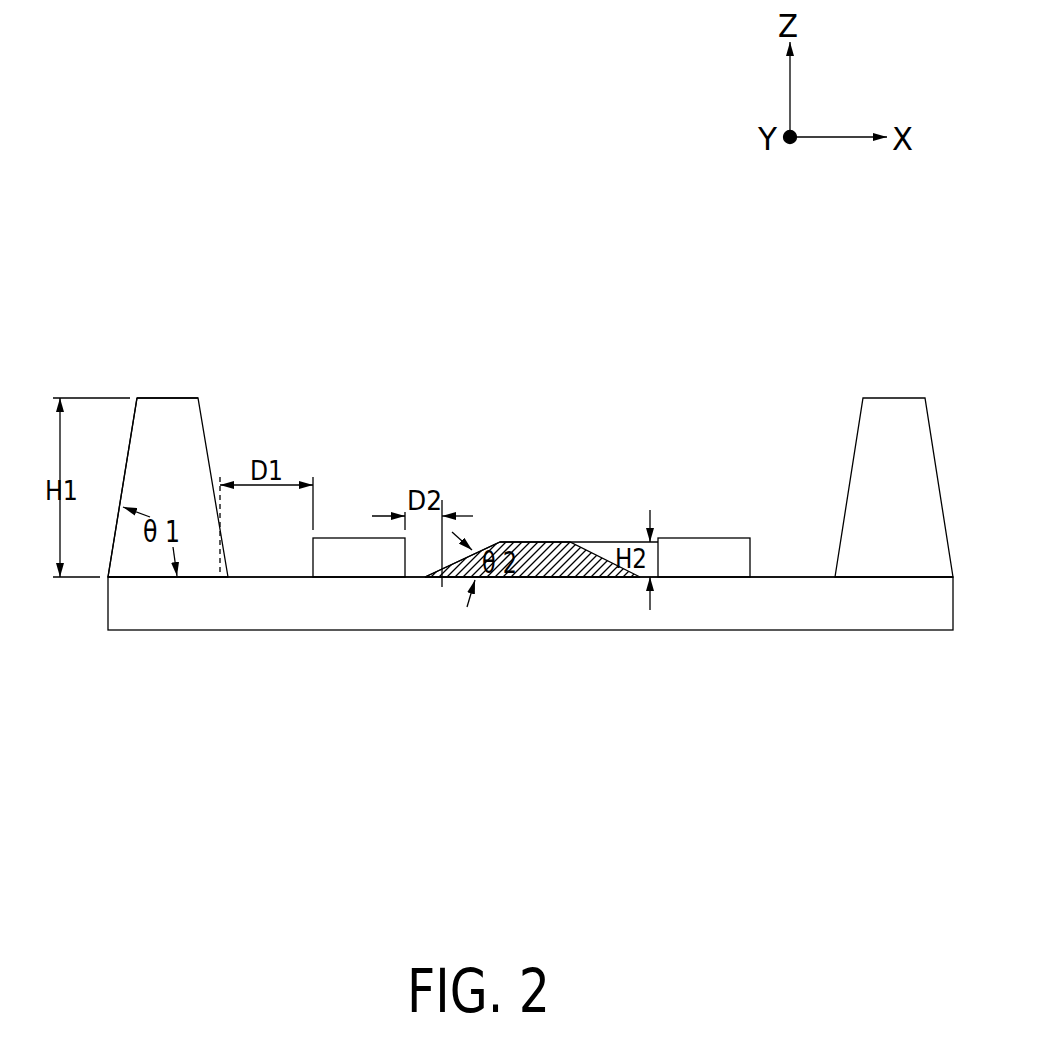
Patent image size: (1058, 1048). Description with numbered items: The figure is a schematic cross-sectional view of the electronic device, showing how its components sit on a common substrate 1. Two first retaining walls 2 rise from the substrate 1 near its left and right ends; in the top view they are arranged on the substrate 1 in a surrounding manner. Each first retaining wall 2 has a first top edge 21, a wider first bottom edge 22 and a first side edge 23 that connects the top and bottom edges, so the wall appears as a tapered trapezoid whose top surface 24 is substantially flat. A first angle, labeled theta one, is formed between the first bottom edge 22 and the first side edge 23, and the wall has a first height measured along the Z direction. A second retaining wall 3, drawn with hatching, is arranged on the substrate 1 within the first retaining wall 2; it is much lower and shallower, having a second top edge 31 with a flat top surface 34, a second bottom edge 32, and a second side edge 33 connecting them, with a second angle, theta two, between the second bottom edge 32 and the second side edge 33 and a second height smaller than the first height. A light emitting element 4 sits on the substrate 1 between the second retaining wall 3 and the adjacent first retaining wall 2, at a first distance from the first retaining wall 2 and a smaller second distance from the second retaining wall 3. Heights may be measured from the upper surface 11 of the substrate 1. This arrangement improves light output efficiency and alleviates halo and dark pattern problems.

The substrate 1 is at (877, 600).
The upper surface of the substrate 11 is at (798, 577).
The first retaining wall 2 is at (521, 497).
The first top edge 21 is at (177, 349).
The top surface of the first retaining wall 24 is at (167, 398).
The first bottom edge 22 is at (168, 579).
The first side edge 23 is at (130, 430).
The second retaining wall 3 is at (530, 572).
The second top edge 31 is at (542, 501).
The top surface of the second retaining wall 34 is at (548, 542).
The second bottom edge 32 is at (548, 580).
The second side edge 33 is at (483, 552).
The light emitting element 4 is at (345, 550).